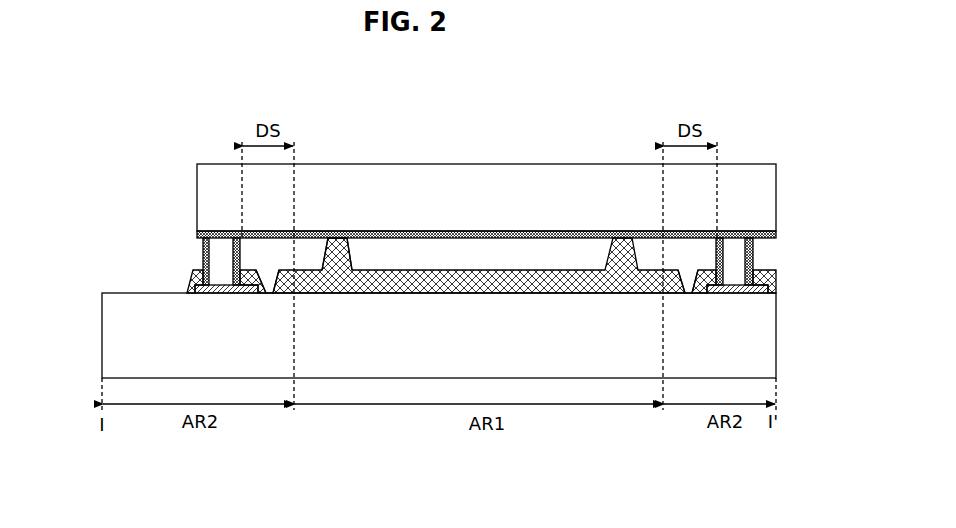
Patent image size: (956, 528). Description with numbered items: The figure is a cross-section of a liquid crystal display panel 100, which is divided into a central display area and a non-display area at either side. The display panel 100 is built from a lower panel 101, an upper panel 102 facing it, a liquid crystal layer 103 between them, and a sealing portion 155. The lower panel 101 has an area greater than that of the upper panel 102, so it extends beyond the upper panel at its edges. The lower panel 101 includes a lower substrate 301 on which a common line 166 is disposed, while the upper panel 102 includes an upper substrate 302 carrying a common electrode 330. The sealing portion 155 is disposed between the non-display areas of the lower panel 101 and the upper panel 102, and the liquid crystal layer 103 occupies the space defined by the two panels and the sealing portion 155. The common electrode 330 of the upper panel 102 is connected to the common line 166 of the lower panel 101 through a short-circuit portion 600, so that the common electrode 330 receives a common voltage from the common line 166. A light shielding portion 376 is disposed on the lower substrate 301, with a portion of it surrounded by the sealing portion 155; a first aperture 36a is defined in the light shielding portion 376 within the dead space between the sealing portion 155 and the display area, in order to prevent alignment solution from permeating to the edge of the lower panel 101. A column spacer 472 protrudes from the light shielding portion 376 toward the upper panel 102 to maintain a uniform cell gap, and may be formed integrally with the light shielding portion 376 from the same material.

The display panel 100 is at (519, 146).
The lower panel 101 is at (788, 270).
The upper panel 102 is at (788, 164).
The liquid crystal layer 103 is at (649, 253).
The sealing portion 155 is at (203, 255).
The common line 166 is at (215, 295).
The lower substrate 301 is at (127, 333).
The upper substrate 302 is at (213, 198).
The common electrode 330 is at (205, 226).
The first aperture 36a is at (270, 278).
The light shielding portion 376 is at (413, 280).
The column spacer 472 is at (352, 245).
The short-circuit portion 600 is at (200, 265).